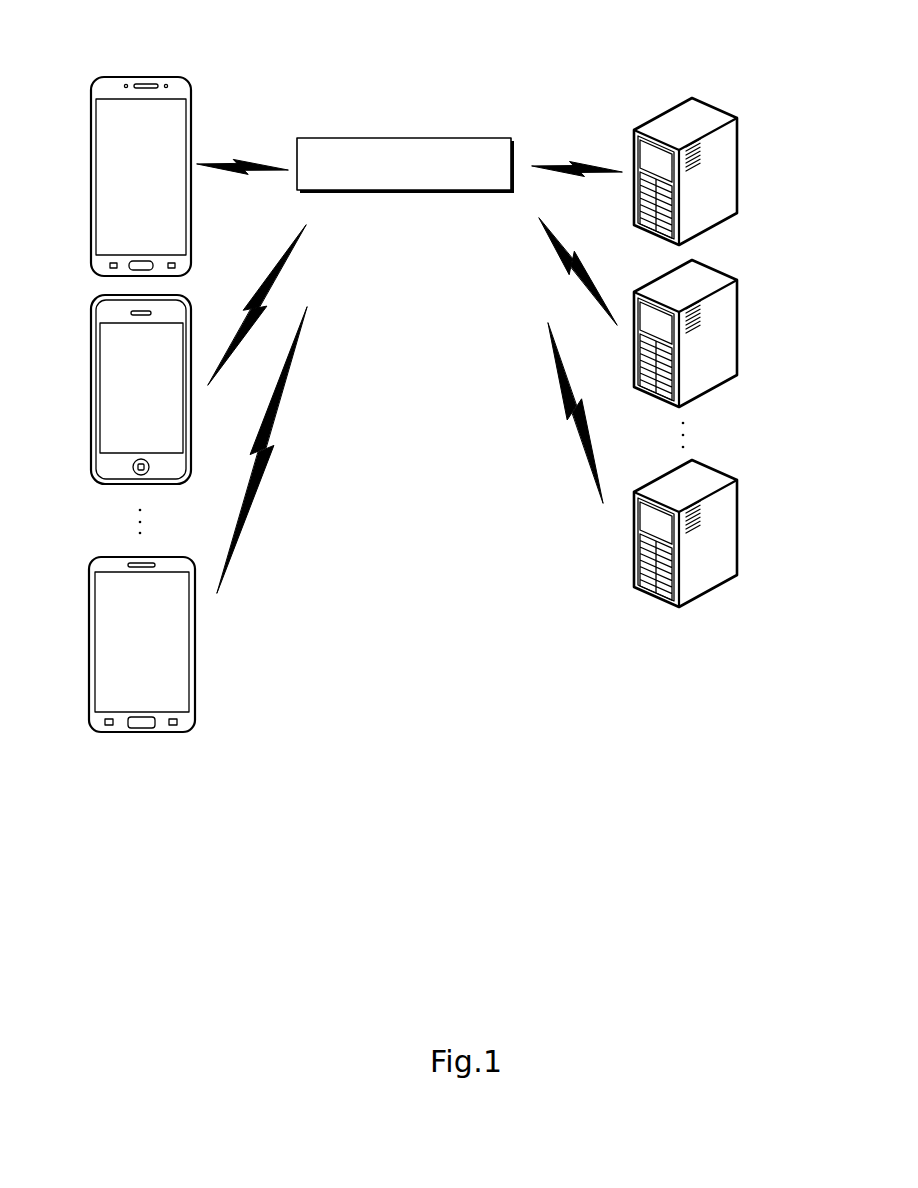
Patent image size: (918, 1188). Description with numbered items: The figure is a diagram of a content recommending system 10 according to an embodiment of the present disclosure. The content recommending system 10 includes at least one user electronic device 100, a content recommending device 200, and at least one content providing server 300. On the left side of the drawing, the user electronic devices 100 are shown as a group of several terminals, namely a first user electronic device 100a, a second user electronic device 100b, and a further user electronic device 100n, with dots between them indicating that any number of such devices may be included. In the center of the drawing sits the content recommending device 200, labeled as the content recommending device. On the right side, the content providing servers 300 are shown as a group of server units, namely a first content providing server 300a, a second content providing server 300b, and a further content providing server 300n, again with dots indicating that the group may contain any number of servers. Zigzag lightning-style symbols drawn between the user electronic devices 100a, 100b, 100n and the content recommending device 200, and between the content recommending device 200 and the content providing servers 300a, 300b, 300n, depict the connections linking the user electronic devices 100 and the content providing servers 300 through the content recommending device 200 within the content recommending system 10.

The content recommending system 10 is at (745, 28).
The user electronic device 100 is at (82, 229).
The user electronic device 100a is at (192, 108).
The user electronic device 100b is at (192, 414).
The user electronic device 100n is at (195, 645).
The content recommending device 200 is at (511, 138).
The content providing server 300 is at (820, 153).
The content providing server 300a is at (738, 160).
The content providing server 300b is at (737, 324).
The content providing server 300n is at (738, 525).